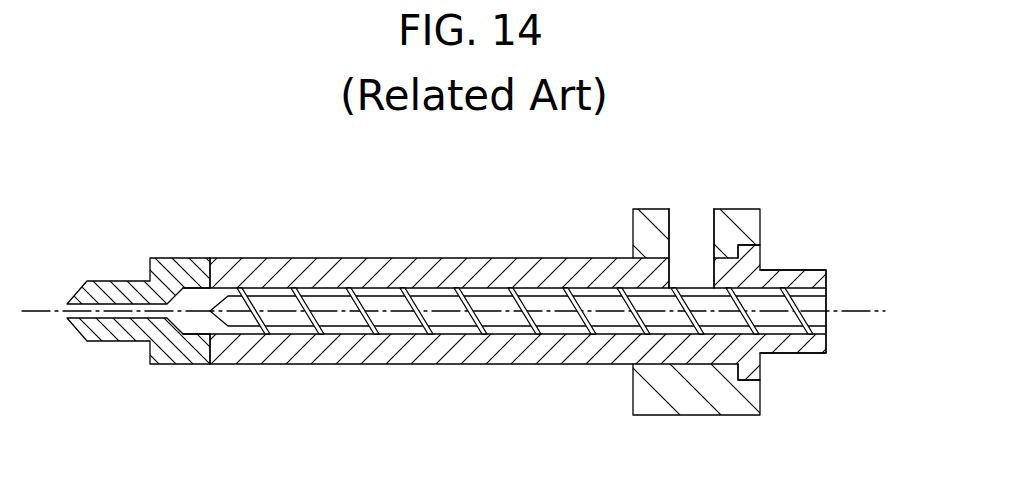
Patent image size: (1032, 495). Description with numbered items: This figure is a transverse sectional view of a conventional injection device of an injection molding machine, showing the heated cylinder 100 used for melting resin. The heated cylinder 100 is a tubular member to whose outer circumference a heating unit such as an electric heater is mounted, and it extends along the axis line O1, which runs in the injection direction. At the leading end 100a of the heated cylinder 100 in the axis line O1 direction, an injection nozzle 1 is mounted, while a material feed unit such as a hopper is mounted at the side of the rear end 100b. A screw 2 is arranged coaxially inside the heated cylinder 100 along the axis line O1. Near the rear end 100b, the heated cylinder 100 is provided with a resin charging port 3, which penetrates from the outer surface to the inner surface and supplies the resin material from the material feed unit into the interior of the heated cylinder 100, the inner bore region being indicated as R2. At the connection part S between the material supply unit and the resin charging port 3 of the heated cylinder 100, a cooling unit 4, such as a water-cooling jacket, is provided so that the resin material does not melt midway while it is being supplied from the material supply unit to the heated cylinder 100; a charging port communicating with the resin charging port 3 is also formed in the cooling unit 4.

The injection nozzle 1 is at (119, 280).
The screw 2 is at (400, 320).
The resin charging port 3 is at (690, 236).
The cooling unit 4 is at (745, 207).
The heated cylinder 100 is at (415, 254).
The leading end 100a is at (209, 269).
The rear end 100b is at (828, 271).
The bore region R2 is at (559, 280).
The connection part S is at (465, 271).
The axis line O1 is at (476, 312).